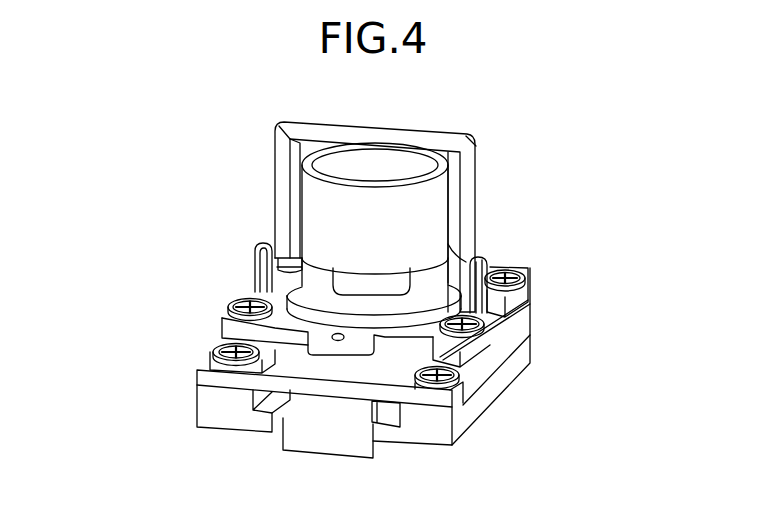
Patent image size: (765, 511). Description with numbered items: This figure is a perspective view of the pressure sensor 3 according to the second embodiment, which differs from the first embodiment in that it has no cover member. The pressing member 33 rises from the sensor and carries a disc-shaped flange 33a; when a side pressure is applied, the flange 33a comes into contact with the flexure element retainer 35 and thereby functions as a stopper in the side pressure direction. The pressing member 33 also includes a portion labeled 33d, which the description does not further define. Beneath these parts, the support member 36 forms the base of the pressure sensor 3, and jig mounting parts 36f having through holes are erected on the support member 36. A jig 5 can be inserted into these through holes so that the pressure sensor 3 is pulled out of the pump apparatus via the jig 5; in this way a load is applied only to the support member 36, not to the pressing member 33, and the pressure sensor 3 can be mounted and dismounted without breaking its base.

The pressure sensor 3 is at (141, 308).
The jig 5 is at (470, 168).
The pressing member 33 is at (457, 192).
The flange 33a is at (472, 250).
The cylindrical portion 33d is at (317, 217).
The flexure element retainer 35 is at (380, 334).
The support member 36 is at (518, 352).
The jig mounting parts 36f is at (265, 244).